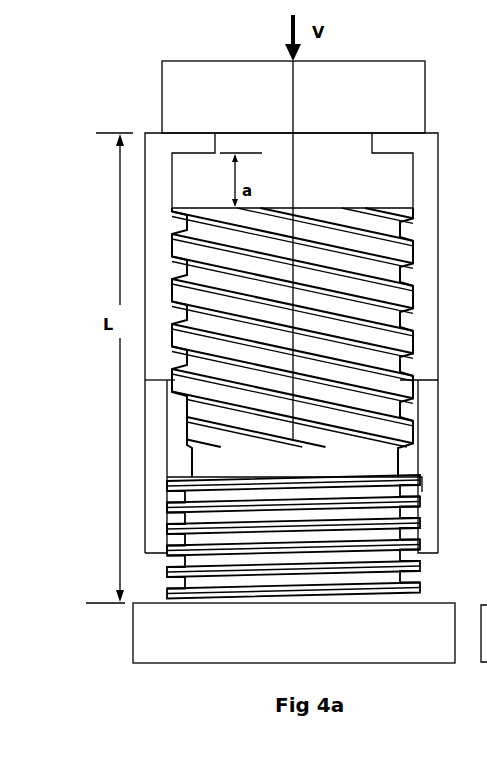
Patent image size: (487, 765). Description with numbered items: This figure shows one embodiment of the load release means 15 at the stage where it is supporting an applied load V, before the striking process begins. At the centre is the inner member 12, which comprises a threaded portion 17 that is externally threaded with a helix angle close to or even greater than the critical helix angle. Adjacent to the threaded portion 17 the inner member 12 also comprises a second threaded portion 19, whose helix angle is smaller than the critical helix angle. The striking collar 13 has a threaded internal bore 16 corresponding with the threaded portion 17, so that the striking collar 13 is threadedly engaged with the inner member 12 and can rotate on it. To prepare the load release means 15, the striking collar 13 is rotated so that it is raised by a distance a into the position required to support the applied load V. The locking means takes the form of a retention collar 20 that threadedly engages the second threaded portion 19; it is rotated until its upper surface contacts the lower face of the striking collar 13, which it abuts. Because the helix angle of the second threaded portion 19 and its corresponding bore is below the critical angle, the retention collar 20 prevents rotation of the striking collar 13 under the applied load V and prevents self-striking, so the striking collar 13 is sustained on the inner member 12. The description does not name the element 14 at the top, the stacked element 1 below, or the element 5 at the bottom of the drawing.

The load block 14 is at (393, 58).
The load release means 15 is at (143, 360).
The inner member 12 is at (172, 232).
The striking collar 13 is at (414, 232).
The threaded internal bore 16 is at (170, 285).
The threaded portion 17 is at (360, 318).
The retention collar 20 is at (440, 471).
The stacked coil element 1 is at (170, 523).
The second threaded portion 19 is at (407, 568).
The base plate 5 is at (414, 666).